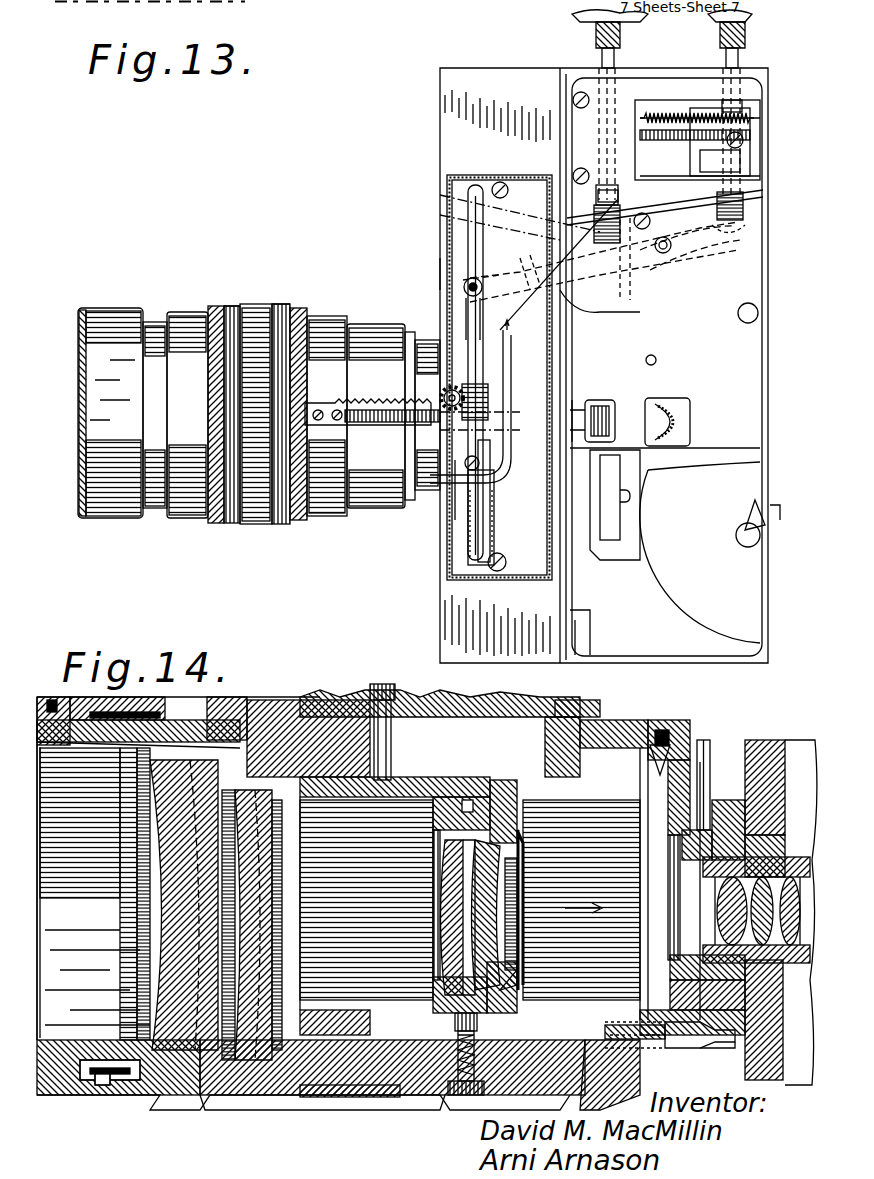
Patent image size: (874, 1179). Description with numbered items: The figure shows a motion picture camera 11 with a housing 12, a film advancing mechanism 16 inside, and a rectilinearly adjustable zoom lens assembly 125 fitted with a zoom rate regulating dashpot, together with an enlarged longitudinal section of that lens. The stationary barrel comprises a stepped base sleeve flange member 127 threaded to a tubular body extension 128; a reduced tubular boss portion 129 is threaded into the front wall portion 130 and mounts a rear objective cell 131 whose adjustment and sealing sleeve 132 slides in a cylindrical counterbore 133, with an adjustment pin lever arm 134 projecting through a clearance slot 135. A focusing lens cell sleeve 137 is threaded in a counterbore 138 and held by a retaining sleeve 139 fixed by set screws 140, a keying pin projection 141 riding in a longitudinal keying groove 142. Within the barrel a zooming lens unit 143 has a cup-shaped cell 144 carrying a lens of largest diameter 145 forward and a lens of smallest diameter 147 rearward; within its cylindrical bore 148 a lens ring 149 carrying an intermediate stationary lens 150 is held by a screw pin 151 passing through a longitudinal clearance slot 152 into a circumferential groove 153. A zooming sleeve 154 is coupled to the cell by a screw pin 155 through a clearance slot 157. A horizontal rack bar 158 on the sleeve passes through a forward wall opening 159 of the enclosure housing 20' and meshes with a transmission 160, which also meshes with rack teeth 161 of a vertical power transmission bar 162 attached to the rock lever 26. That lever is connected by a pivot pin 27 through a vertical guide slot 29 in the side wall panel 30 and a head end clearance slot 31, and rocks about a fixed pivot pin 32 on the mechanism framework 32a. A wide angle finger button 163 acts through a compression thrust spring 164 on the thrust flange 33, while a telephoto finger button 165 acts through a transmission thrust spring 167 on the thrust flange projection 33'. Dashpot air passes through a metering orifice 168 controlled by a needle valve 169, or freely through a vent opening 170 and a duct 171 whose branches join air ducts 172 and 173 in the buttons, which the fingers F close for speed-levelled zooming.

In FIG. 13, the motion picture camera 11 is at (424, 161).
In FIG. 13, the body casing or housing 12 is at (660, 660).
In FIG. 13, the film advancing mechanism 16 is at (595, 395).
In FIG. 13, the enclosure housing 20' is at (462, 382).
In FIG. 13, the rock lever 26 is at (530, 195).
In FIG. 13, the pivot pin 27 is at (476, 280).
In FIG. 13, the vertical guide slot 29 is at (468, 228).
In FIG. 13, the side wall panel 30 is at (500, 75).
In FIG. 13, the head end clearance slot 31 is at (462, 289).
In FIG. 13, the fixed pivot pin 32 is at (666, 260).
In FIG. 13, the mechanism framework 32a is at (738, 376).
In FIG. 13, the angular thrust flange 33 is at (594, 217).
In FIG. 13, the angular thrust flange projection 33' is at (763, 218).
In FIG. 13, the zoom lens assembly 125 is at (224, 289).
In FIG. 14, the zoom lens assembly 125 is at (368, 662).
In FIG. 14, the base sleeve flange member 127 is at (620, 728).
In FIG. 14, the tubular body extension 128 is at (345, 705).
In FIG. 14, the tubular boss portion 129 is at (815, 755).
In FIG. 13, the front wall portion 130 is at (445, 262).
In FIG. 14, the front wall portion 130 is at (783, 724).
In FIG. 14, the rear objective cell 131 is at (780, 1020).
In FIG. 14, the adjustment and sealing sleeve 132 is at (668, 968).
In FIG. 14, the cylindrical counterbore 133 is at (668, 990).
In FIG. 14, the adjustment pin lever arm 134 is at (715, 745).
In FIG. 14, the clearance slot 135 is at (728, 856).
In FIG. 14, the cell sleeve 137 is at (80, 1100).
In FIG. 14, the counterbore 138 is at (240, 712).
In FIG. 14, the retaining sleeve 139 is at (122, 700).
In FIG. 14, the set screws 140 is at (88, 692).
In FIG. 14, the keying pin projection 141 is at (120, 1110).
In FIG. 14, the longitudinal keying groove 142 is at (105, 1110).
In FIG. 14, the zooming lens unit 143 is at (515, 982).
In FIG. 14, the cup-shaped cell 144 is at (500, 782).
In FIG. 14, the lens of largest diameter 145 is at (270, 965).
In FIG. 14, the lens of smallest diameter 147 is at (500, 945).
In FIG. 14, the cylindrical bore 148 is at (300, 1040).
In FIG. 14, the lens ring 149 is at (433, 1000).
In FIG. 14, the intermediate stationary lens 150 is at (445, 920).
In FIG. 14, the screw pin 151 is at (455, 1028).
In FIG. 14, the longitudinal clearance slot 152 is at (295, 1098).
In FIG. 14, the circumferential groove 153 is at (465, 797).
In FIG. 13, the zooming sleeve 154 is at (300, 312).
In FIG. 14, the zooming sleeve 154 is at (520, 700).
In FIG. 14, the screw pin 155 is at (400, 750).
In FIG. 14, the longitudinal clearance slot 157 is at (545, 722).
In FIG. 13, the horizontal rack bar 158 is at (366, 404).
In FIG. 13, the forward wall opening 159 is at (468, 388).
In FIG. 13, the transmission 160 is at (480, 392).
In FIG. 13, the rack teeth 161 is at (452, 507).
In FIG. 13, the manual power transmission bar 162 is at (492, 520).
In FIG. 13, the finger button 163 is at (620, 50).
In FIG. 13, the compression thrust spring 164 is at (590, 218).
In FIG. 13, the finger button 165 is at (745, 58).
In FIG. 13, the transmission thrust spring 167 is at (740, 196).
In FIG. 14, the metering orifice 168 is at (700, 740).
In FIG. 14, the adjustable needle valve 169 is at (662, 735).
In FIG. 14, the vent opening 170 is at (675, 1045).
In FIG. 13, the air exhaust and inlet duct 171 is at (515, 460).
In FIG. 14, the air exhaust and inlet duct 171 is at (725, 1048).
In FIG. 13, the longitudinal air duct 172 is at (598, 48).
In FIG. 13, the longitudinal air duct 173 is at (750, 38).
In FIG. 13, the fingers F is at (635, 20).